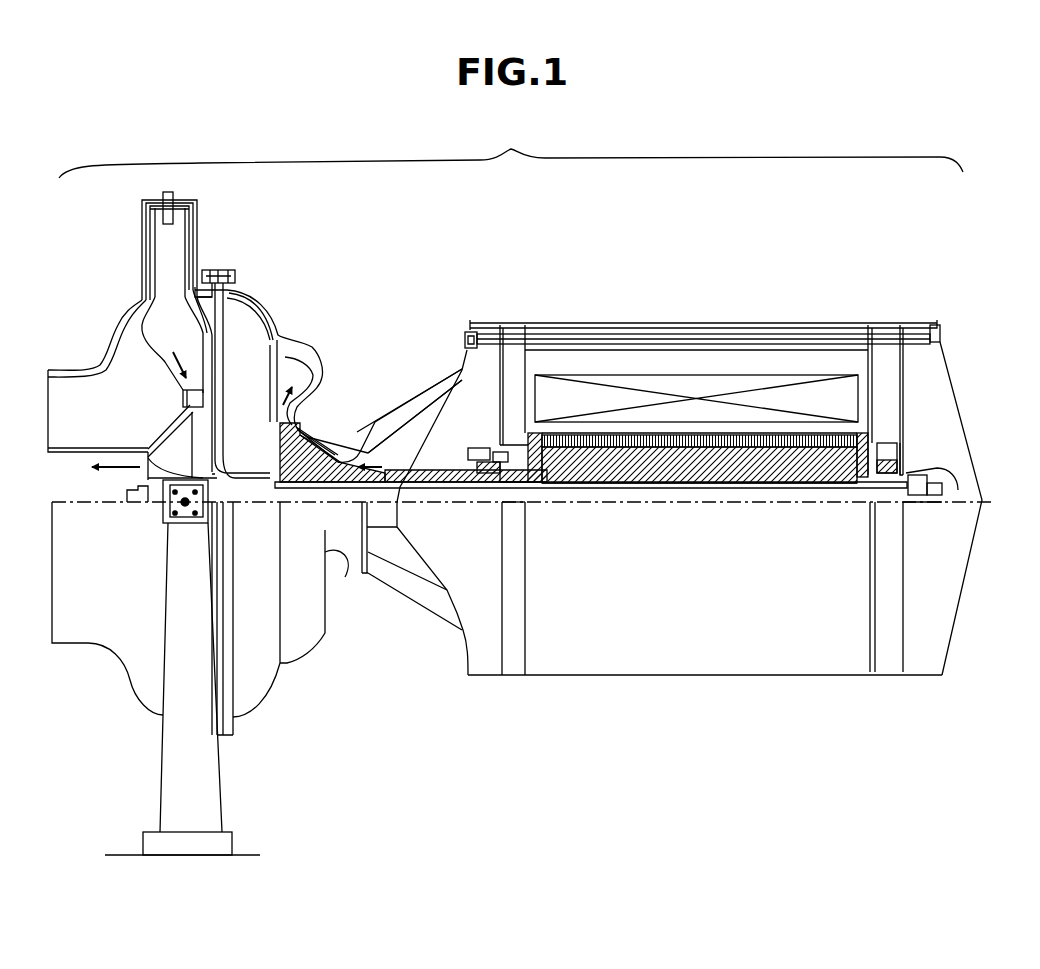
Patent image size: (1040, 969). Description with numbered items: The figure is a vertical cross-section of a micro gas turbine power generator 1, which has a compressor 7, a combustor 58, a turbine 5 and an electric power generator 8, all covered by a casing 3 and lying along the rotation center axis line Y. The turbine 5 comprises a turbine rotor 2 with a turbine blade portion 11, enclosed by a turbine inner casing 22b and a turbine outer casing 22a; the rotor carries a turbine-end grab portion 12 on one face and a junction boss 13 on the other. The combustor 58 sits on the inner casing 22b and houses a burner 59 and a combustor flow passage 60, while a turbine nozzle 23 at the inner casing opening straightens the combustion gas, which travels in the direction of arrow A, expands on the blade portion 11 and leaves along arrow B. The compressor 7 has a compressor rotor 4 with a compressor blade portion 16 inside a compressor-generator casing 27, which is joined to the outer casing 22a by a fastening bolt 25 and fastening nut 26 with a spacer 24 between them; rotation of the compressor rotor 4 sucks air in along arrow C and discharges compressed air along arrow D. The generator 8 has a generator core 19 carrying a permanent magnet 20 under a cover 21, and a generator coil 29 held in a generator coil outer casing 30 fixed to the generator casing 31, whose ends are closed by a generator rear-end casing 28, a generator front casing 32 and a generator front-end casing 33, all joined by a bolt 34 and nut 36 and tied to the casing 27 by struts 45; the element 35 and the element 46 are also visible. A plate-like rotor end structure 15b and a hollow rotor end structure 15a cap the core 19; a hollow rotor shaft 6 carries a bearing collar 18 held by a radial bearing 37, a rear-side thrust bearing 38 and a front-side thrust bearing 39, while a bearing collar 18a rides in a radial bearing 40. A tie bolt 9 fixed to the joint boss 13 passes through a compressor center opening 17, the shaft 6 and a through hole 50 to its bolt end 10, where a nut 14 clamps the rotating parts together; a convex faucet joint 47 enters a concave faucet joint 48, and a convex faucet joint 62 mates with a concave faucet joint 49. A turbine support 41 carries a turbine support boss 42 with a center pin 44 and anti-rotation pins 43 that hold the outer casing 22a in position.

The micro gas turbine power generator 1 is at (511, 150).
The turbine rotor 2 is at (155, 500).
The casing 3 is at (815, 322).
The compressor rotor 4 is at (280, 493).
The turbine 5 is at (167, 458).
The rotor shaft 6 is at (437, 503).
The compressor 7 is at (313, 427).
The electric power generator 8 is at (664, 322).
The tie bolt 9 is at (497, 499).
The bolt end 10 is at (937, 495).
The turbine blade portion 11 is at (140, 455).
The turbine-end grab portion 12 is at (133, 493).
The junction boss 13 is at (253, 493).
The nut 14 is at (913, 473).
The hollow rotor end structure 15a is at (903, 440).
The plate-like rotor end structure 15b is at (517, 423).
The compressor blade portion 16 is at (328, 447).
The compressor center opening 17 is at (293, 488).
The bearing collar 18 is at (500, 447).
The bearing collar 18a is at (880, 488).
The generator core 19 is at (717, 497).
The permanent magnet 20 is at (627, 491).
The cover 21 is at (723, 420).
The turbine outer casing 22a is at (60, 368).
The turbine inner casing 22b is at (140, 333).
The turbine nozzle 23 is at (148, 357).
The spacer 24 is at (223, 282).
The fastening bolt 25 is at (207, 268).
The fastening nut 26 is at (235, 282).
The compressor-generator casing 27 is at (283, 355).
The generator rear-end casing 28 is at (517, 668).
The generator coil 29 is at (597, 491).
The generator coil outer casing 30 is at (624, 356).
The generator casing 31 is at (708, 677).
The generator front casing 32 is at (887, 665).
The generator front-end casing 33 is at (932, 665).
The bolt 34 is at (753, 322).
The column plate 35 is at (792, 322).
The nut 36 is at (465, 338).
The radial bearing 37 is at (470, 462).
The rear-side thrust bearing 38 is at (480, 448).
The front-side thrust bearing 39 is at (520, 491).
The radial bearing 40 is at (883, 442).
The turbine support 41 is at (210, 798).
The turbine support boss 42 is at (177, 520).
The anti-rotation pins 43 is at (193, 517).
The center pin 44 is at (180, 504).
The struts 45 is at (400, 595).
The sleeve 46 is at (313, 489).
The convex faucet joint 47 is at (303, 417).
The turbine shaft concave faucet joint 48 is at (270, 467).
The concave faucet joint 49 is at (364, 565).
The through hole 50 is at (783, 497).
The combustor 58 is at (140, 258).
The burner 59 is at (165, 222).
The combustor flow passage 60 is at (142, 205).
The convex faucet joint 62 is at (342, 552).
The arrow A is at (173, 367).
The arrow B is at (112, 473).
The arrow C is at (370, 465).
The arrow D is at (293, 377).
The rotation center axis line Y is at (985, 499).